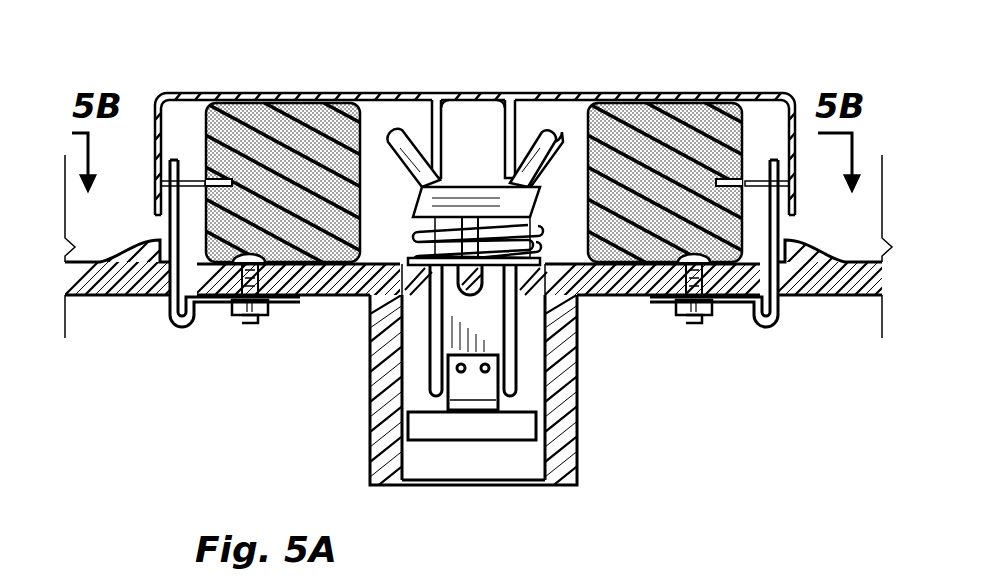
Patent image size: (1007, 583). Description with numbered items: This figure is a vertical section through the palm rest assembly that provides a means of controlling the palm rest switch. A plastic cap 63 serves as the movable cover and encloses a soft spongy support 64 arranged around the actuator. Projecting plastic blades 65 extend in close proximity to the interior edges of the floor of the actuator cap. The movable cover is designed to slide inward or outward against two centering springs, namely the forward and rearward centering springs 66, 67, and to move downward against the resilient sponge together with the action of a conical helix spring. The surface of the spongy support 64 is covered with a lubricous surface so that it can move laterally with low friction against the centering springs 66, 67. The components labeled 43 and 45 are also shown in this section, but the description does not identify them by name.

The terminal clip holder 43 is at (515, 343).
The wing terminal contact 45 is at (390, 130).
The insulating block 63 is at (692, 113).
The cover 64 is at (752, 96).
The cover tab 65 is at (513, 135).
The mounting bracket 66 is at (775, 325).
The mounting bracket 67 is at (176, 323).